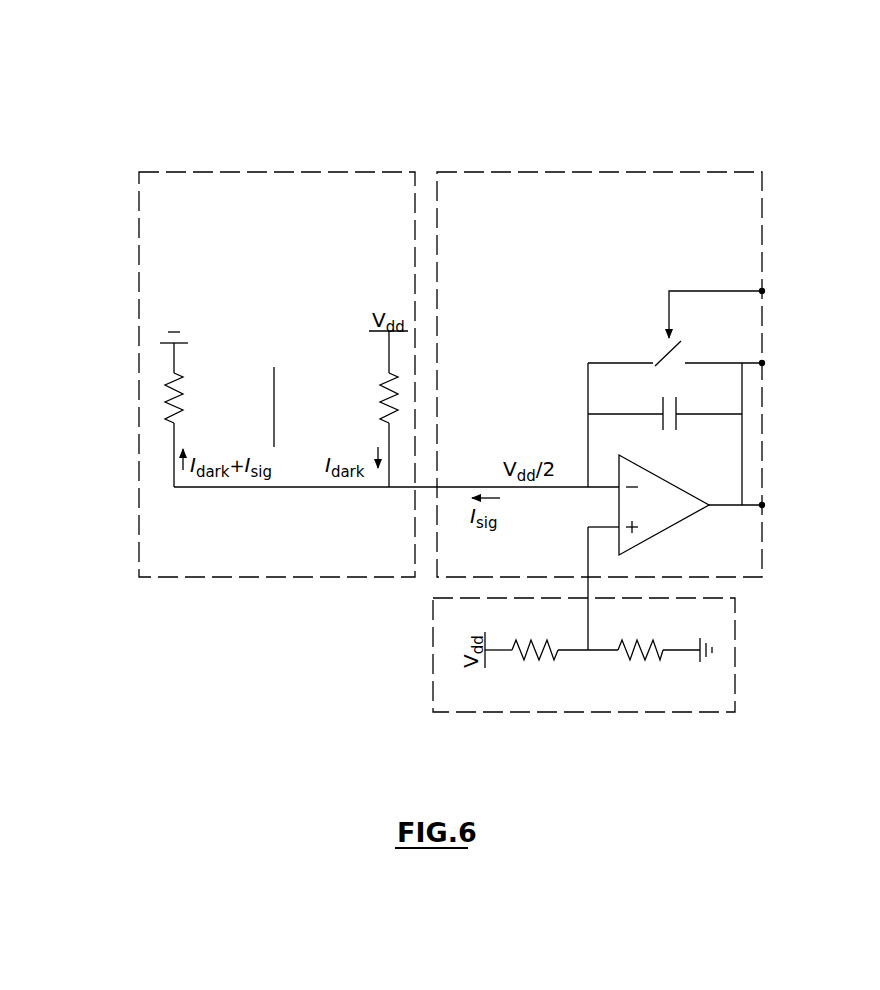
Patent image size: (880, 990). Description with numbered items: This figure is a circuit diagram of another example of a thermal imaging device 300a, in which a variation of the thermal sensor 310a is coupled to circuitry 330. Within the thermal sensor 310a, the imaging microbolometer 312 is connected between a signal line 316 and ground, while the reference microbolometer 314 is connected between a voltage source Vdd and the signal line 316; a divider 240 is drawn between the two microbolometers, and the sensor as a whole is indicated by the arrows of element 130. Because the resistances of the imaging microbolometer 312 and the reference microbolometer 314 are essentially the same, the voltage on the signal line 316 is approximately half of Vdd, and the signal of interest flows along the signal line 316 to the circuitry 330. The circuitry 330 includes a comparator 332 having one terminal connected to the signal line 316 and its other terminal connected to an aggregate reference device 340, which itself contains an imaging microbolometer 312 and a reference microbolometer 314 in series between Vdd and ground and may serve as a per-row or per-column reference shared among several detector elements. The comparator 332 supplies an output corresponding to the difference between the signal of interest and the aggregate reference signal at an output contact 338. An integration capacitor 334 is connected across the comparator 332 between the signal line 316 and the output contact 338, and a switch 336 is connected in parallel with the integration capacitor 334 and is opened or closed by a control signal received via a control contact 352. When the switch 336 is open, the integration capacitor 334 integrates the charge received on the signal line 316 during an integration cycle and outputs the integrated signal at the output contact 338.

The thermal imaging device 300a is at (122, 82).
The thermal sensor 310a is at (313, 182).
The circuitry 330 is at (638, 182).
The aggregate reference device 340 is at (433, 650).
The bolometer pixel 130 is at (130, 414).
The imaging microbolometer 312 is at (165, 418).
The reference microbolometer 314 is at (383, 398).
The thermal isolation divider 240 is at (275, 394).
The signal line 316 is at (330, 490).
The comparator 332 is at (683, 527).
The integration capacitor 334 is at (681, 430).
The switch 336 is at (656, 360).
The output contact 338 is at (764, 365).
The control contact 352 is at (764, 293).